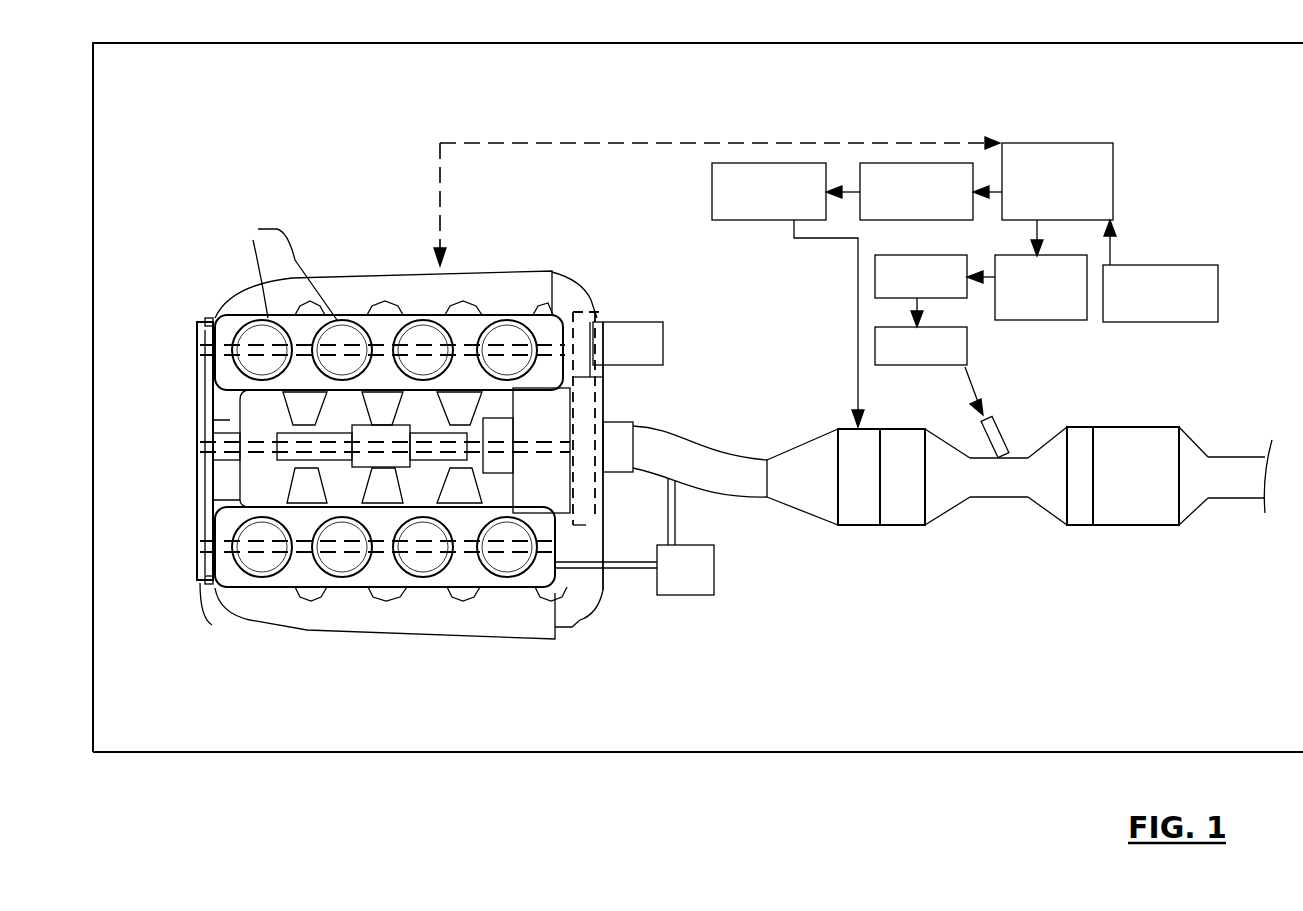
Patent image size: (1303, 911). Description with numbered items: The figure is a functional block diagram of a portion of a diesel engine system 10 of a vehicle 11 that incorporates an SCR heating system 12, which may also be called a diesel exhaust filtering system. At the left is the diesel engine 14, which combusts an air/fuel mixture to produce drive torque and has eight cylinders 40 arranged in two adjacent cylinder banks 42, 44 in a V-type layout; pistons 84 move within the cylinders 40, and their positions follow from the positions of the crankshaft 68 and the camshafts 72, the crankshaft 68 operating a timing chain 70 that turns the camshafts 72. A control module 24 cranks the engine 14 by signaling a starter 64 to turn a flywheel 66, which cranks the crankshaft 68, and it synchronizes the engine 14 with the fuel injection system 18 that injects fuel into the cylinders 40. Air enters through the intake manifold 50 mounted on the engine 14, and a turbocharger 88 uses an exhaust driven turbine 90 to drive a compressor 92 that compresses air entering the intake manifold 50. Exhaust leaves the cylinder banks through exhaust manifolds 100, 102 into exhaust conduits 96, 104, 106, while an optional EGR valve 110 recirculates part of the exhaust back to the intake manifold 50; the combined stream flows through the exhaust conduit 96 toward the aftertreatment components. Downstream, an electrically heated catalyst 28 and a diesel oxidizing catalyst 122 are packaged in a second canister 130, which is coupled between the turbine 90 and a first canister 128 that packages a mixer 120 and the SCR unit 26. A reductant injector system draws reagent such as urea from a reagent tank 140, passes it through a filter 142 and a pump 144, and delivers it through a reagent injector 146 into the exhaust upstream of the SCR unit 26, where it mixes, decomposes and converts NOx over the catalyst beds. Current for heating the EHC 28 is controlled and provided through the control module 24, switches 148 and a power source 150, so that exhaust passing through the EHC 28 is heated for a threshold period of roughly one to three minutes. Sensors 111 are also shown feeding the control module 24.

The diesel engine system 10 is at (789, 118).
The vehicle 11 is at (951, 43).
The SCR heating system 12 is at (805, 578).
The diesel engine 14 is at (265, 636).
The fuel injection system 18 is at (277, 438).
The control module 24 is at (1070, 143).
The SCR unit 26 is at (1163, 427).
The electrically heated catalyst 28 is at (842, 428).
The cylinders 40 is at (247, 322).
The first cylinder bank 42 is at (205, 328).
The second cylinder bank 44 is at (215, 590).
The intake manifold 50 is at (198, 482).
The starter 64 is at (643, 322).
The flywheel 66 is at (598, 525).
The crankshaft 68 is at (520, 442).
The timing chain 70 is at (197, 515).
The camshafts 72 is at (462, 345).
The pistons 84 is at (282, 270).
The turbocharger 88 is at (560, 525).
The turbine 90 is at (606, 418).
The compressor 92 is at (575, 312).
The exhaust conduit 96 is at (722, 455).
The first exhaust manifold 100 is at (355, 278).
The second exhaust manifold 102 is at (422, 639).
The exhaust conduit 104 is at (596, 307).
The exhaust conduit 106 is at (572, 628).
The EGR valve 110 is at (685, 596).
The sensors 111 is at (1175, 264).
The mixer 120 is at (1078, 427).
The diesel oxidizing catalyst 122 is at (905, 428).
The first canister 128 is at (1193, 505).
The second canister 130 is at (953, 508).
The reagent tank 140 is at (1062, 320).
The filter 142 is at (957, 255).
The pump 144 is at (967, 360).
The reagent injector 146 is at (1003, 452).
The switches 148 is at (917, 163).
The power source 150 is at (712, 172).